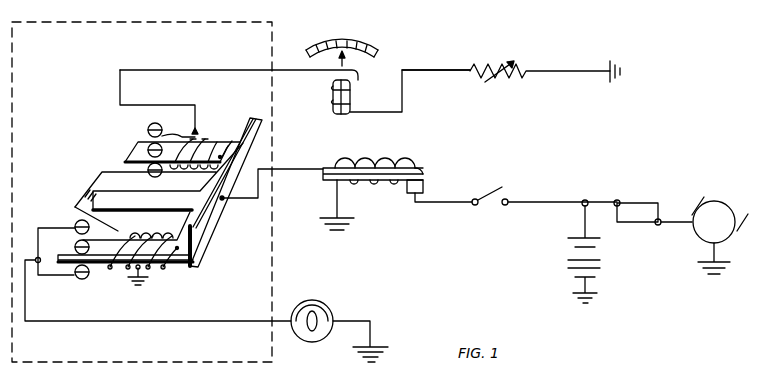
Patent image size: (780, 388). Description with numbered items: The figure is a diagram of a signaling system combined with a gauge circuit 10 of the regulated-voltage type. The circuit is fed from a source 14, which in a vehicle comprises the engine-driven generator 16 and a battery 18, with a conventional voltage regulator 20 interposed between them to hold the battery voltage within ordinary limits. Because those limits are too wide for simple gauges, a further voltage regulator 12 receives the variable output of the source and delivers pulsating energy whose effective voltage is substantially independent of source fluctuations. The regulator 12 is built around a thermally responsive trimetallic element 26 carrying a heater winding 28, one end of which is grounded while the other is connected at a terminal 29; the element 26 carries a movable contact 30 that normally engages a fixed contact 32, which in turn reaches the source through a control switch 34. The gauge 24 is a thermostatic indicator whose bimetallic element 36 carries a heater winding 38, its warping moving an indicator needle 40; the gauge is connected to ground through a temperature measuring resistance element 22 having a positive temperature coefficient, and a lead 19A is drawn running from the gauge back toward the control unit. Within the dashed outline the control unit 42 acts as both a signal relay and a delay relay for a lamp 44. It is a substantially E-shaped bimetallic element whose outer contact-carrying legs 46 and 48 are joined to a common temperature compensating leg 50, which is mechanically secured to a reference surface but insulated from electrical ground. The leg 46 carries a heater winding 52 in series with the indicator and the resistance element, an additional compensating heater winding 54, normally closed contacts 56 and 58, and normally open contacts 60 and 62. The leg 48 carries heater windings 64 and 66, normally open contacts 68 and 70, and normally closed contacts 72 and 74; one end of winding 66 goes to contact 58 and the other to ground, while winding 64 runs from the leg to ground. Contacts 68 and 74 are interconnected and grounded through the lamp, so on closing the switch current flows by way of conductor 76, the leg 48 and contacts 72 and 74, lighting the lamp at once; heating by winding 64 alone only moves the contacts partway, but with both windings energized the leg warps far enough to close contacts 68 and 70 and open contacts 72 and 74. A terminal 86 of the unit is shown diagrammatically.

The gauge circuit 10 is at (428, 66).
The voltage regulator 12 is at (352, 151).
The source 14 is at (633, 198).
The generator 16 is at (728, 206).
The battery 18 is at (600, 267).
The connecting lead 19A is at (127, 70).
The voltage regulator 20 is at (643, 227).
The temperature measuring resistance element 22 is at (498, 60).
The gauge 24 is at (360, 43).
The thermally responsive trimetallic element 26 is at (386, 182).
The heater winding 28 is at (412, 158).
The terminal 29 is at (428, 165).
The movable contact 30 is at (428, 178).
The fixed contact 32 is at (425, 192).
The control switch 34 is at (503, 197).
The bimetallic element 36 is at (350, 108).
The heater winding 38 is at (352, 97).
The indicator needle 40 is at (347, 62).
The control unit 42 is at (277, 50).
The lamp 44 is at (330, 303).
The contact carrying leg 46 is at (242, 128).
The contact carrying leg 48 is at (142, 231).
The temperature compensating leg 50 is at (100, 193).
The heater winding 52 is at (202, 135).
The additional heater winding 54 is at (167, 133).
The normally closed contact 56 is at (125, 161).
The normally closed contact 58 is at (168, 168).
The normally open contact 60 is at (147, 147).
The normally open contact 62 is at (147, 127).
The heater winding 64 is at (165, 270).
The heater winding 66 is at (127, 270).
The normally open contact 68 is at (77, 220).
The normally open contact 70 is at (63, 251).
The normally closed contact 72 is at (88, 275).
The normally closed contact 74 is at (80, 280).
The conductor 76 is at (284, 175).
The terminal 86 is at (223, 200).